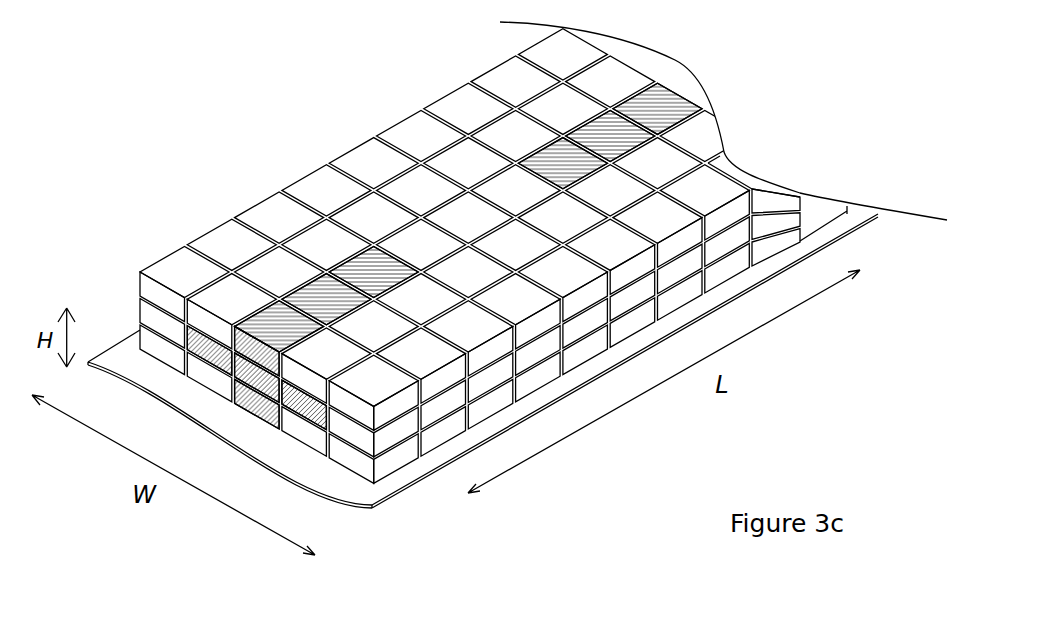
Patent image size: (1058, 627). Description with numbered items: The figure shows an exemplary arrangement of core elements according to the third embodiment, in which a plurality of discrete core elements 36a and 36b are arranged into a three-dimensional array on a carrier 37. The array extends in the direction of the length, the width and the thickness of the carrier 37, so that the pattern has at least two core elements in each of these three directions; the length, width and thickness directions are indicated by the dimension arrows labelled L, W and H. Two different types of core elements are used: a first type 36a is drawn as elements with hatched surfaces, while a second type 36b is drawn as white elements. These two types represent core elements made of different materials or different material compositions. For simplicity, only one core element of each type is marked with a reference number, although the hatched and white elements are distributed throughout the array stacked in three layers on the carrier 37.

The core element of first type 36a is at (353, 270).
The core element of second type 36b is at (180, 270).
The carrier 37 is at (342, 490).